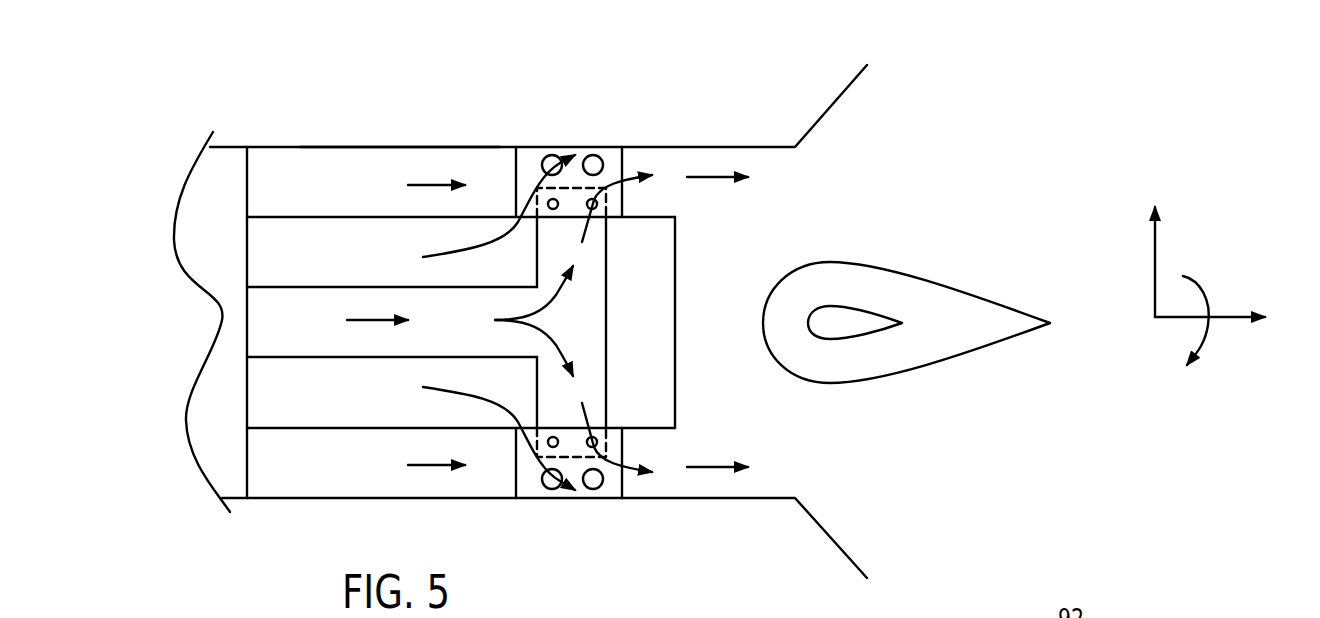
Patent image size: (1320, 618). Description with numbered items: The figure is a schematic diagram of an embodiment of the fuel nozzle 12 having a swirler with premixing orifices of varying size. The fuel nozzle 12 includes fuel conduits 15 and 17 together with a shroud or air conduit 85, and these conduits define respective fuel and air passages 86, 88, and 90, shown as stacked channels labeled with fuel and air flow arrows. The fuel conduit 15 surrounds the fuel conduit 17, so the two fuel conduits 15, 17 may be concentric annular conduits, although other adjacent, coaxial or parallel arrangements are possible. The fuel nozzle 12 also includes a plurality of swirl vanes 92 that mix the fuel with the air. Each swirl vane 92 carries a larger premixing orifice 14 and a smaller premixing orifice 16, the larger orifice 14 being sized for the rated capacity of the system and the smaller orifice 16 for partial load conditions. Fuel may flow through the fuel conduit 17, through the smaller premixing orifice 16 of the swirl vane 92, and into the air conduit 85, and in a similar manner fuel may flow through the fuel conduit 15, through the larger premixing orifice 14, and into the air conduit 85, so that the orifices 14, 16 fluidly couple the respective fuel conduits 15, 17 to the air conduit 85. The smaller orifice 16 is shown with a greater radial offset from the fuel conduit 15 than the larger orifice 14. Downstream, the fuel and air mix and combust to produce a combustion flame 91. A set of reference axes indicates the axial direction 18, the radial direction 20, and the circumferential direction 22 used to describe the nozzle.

The fuel nozzle 12 is at (338, 97).
The air conduit 85 is at (368, 147).
The fuel conduit 15 is at (400, 217).
The fuel conduit 17 is at (398, 287).
The fuel passage 88 is at (530, 277).
The fuel passage 86 is at (478, 336).
The air passage 90 is at (478, 181).
The swirl vane 92 is at (617, 153).
The premixing orifice 14 is at (593, 153).
The premixing orifice 16 is at (556, 210).
The combustion flame 91 is at (942, 275).
The radial direction 20 is at (1153, 252).
The axial direction 18 is at (1224, 320).
The circumferential direction 22 is at (1205, 290).